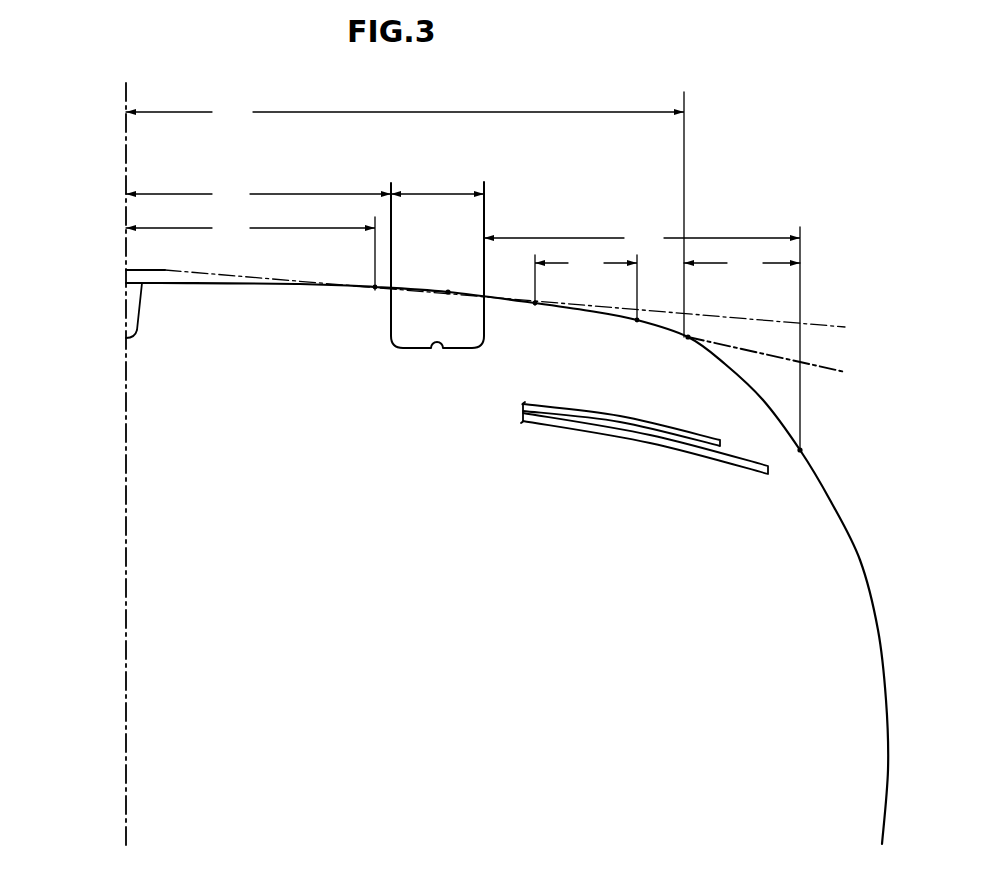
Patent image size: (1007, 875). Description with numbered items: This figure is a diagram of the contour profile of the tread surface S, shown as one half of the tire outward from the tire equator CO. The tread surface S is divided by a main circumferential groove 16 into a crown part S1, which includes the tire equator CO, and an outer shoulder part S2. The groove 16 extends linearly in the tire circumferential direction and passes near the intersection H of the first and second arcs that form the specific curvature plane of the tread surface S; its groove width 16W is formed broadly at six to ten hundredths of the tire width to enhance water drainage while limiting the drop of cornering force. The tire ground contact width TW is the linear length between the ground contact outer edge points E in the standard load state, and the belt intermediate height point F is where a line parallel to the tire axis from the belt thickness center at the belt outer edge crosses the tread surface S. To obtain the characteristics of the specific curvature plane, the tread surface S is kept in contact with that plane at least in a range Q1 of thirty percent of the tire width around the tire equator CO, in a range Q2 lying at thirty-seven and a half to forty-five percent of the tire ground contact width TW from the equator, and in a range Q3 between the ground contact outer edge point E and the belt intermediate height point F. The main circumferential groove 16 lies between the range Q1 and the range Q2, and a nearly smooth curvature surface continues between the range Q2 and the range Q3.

The tire ground contact width TW is at (405, 214).
The crown part S1 is at (258, 194).
The range around the tire equator Q1 is at (251, 253).
The groove width 16W is at (437, 193).
The shoulder part S2 is at (642, 338).
The range distant from the tire equator Q2 is at (586, 287).
The range between point E and point F Q3 is at (742, 263).
The tread surface S is at (167, 283).
The tire equator CO is at (126, 375).
The intersection of the first arc and second arc H is at (435, 304).
The main circumferential groove 16 is at (445, 350).
The ground contact outer edge point E is at (697, 331).
The belt intermediate height point F is at (814, 450).